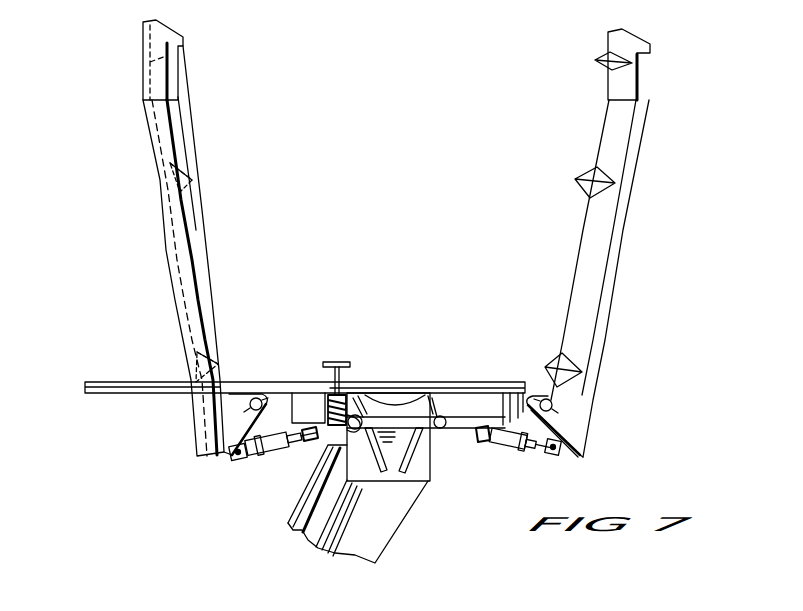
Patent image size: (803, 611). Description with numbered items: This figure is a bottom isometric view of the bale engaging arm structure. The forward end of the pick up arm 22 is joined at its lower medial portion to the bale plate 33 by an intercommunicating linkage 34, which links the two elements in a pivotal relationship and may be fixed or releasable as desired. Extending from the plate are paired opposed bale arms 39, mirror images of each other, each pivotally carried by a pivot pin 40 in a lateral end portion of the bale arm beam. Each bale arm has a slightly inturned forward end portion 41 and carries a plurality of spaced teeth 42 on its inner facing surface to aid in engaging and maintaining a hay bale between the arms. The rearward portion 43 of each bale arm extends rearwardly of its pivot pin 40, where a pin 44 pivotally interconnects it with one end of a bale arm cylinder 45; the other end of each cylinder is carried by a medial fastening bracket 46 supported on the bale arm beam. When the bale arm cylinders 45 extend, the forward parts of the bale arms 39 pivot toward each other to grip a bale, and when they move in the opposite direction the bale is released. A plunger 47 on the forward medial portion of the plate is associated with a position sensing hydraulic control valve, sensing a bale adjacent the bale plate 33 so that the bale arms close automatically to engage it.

The pick up arm 22 is at (384, 520).
The bale plate 33 is at (500, 381).
The intercommunicating linkage 34 is at (418, 400).
The bale arm 39 is at (162, 210).
The pivot pin 40 is at (254, 398).
The inturned forward end portion 41 is at (160, 73).
The teeth 42 is at (182, 178).
The rearward portion of bale arm 43 is at (213, 452).
The pin 44 is at (243, 460).
The bale arm cylinder 45 is at (262, 460).
The medial fastening bracket 46 is at (320, 447).
The plunger 47 is at (346, 361).